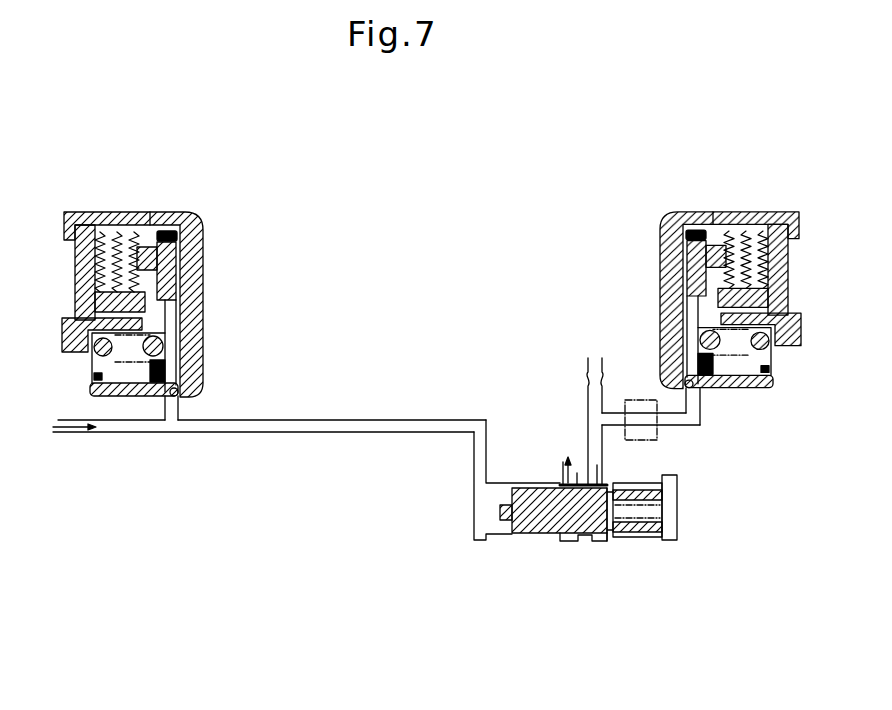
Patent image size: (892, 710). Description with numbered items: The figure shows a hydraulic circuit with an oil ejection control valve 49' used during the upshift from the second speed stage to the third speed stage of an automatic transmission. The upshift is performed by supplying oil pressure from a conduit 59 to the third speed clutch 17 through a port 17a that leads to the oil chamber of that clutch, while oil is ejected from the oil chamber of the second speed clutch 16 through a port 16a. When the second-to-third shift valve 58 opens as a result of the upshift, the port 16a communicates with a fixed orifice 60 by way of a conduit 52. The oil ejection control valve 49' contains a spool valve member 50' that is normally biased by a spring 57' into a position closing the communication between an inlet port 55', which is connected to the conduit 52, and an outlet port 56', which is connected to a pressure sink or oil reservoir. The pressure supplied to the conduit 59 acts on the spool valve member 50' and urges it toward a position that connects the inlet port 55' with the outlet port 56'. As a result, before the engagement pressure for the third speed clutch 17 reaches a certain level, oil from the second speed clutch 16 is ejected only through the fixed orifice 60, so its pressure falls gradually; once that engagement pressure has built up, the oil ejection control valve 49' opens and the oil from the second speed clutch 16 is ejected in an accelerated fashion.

The second speed clutch 16 is at (641, 211).
The port 16a is at (697, 399).
The third speed clutch 17 is at (205, 205).
The port 17a is at (182, 400).
The oil ejection control valve 49' is at (602, 579).
The spool valve member 50' is at (543, 513).
The conduit 52 is at (703, 420).
The inlet port 55' is at (649, 455).
The outlet port 56' is at (553, 445).
The spring 57' is at (688, 507).
The 2-3 shift valve 58 is at (628, 400).
The conduit 59 is at (123, 430).
The fixed orifice 60 is at (574, 370).